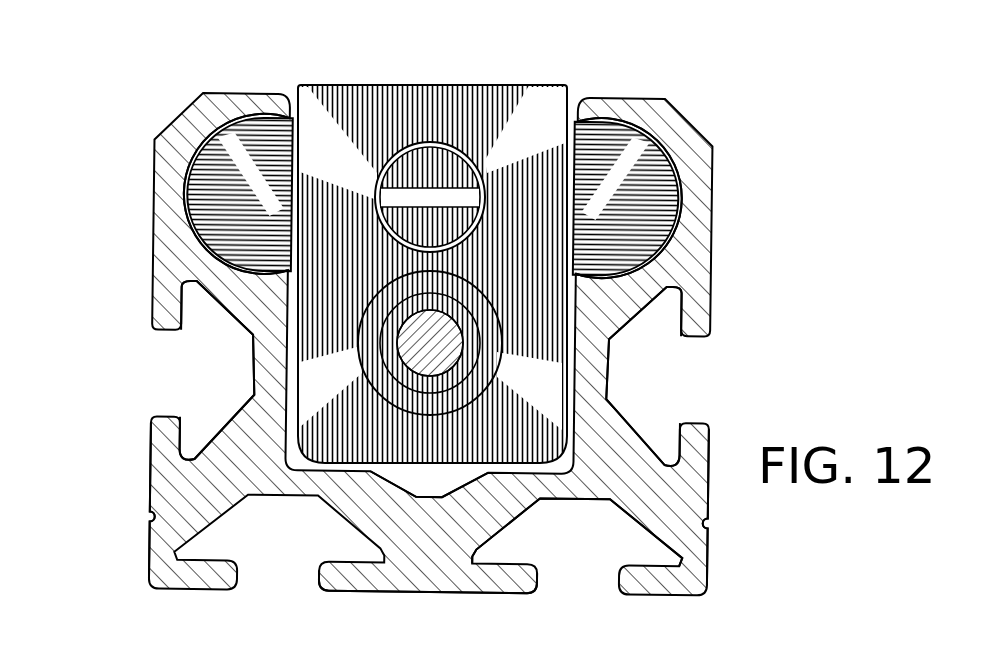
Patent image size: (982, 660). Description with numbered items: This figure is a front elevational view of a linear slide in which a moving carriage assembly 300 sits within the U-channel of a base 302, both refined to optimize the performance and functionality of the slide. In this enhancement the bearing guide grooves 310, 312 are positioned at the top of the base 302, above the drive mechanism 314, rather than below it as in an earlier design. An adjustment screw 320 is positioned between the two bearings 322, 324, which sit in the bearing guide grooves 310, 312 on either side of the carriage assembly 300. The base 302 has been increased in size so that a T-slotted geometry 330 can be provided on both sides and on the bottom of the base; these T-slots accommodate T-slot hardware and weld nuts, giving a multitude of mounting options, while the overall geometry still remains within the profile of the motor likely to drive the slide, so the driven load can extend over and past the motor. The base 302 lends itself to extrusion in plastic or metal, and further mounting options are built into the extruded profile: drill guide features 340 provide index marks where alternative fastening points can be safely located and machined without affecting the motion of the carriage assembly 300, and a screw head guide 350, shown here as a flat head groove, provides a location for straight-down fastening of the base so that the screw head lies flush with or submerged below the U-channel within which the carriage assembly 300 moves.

The moving carriage assembly 300 is at (475, 112).
The base 302 is at (688, 246).
The bearing guide groove 310 is at (186, 195).
The bearing guide groove 312 is at (671, 200).
The drive mechanism 314 is at (432, 358).
The adjustment screw 320 is at (435, 170).
The bearing 322 is at (253, 157).
The bearing 324 is at (608, 160).
The T-slotted geometry 330 is at (200, 307).
The drill guide feature 340 is at (150, 515).
The screw head guide 350 is at (420, 480).